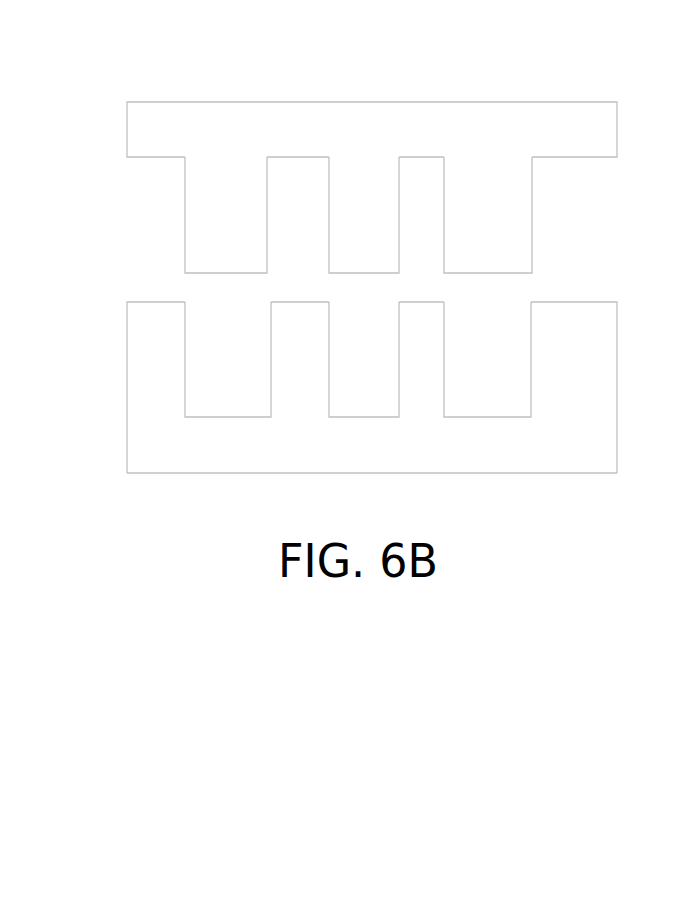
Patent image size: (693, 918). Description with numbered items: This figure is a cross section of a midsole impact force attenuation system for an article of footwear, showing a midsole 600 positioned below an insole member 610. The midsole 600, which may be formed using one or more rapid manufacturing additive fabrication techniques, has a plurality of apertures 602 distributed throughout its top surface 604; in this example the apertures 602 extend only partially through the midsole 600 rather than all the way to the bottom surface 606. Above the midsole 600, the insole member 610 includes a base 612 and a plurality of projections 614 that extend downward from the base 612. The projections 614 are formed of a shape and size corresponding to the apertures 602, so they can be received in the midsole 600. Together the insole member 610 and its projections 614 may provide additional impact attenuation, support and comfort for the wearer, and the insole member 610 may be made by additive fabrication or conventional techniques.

The midsole 600 is at (398, 464).
The apertures 602 is at (203, 365).
The top surface 604 is at (142, 300).
The bottom surface 606 is at (157, 475).
The insole member 610 is at (278, 98).
The base 612 is at (160, 128).
The projections 614 is at (200, 220).